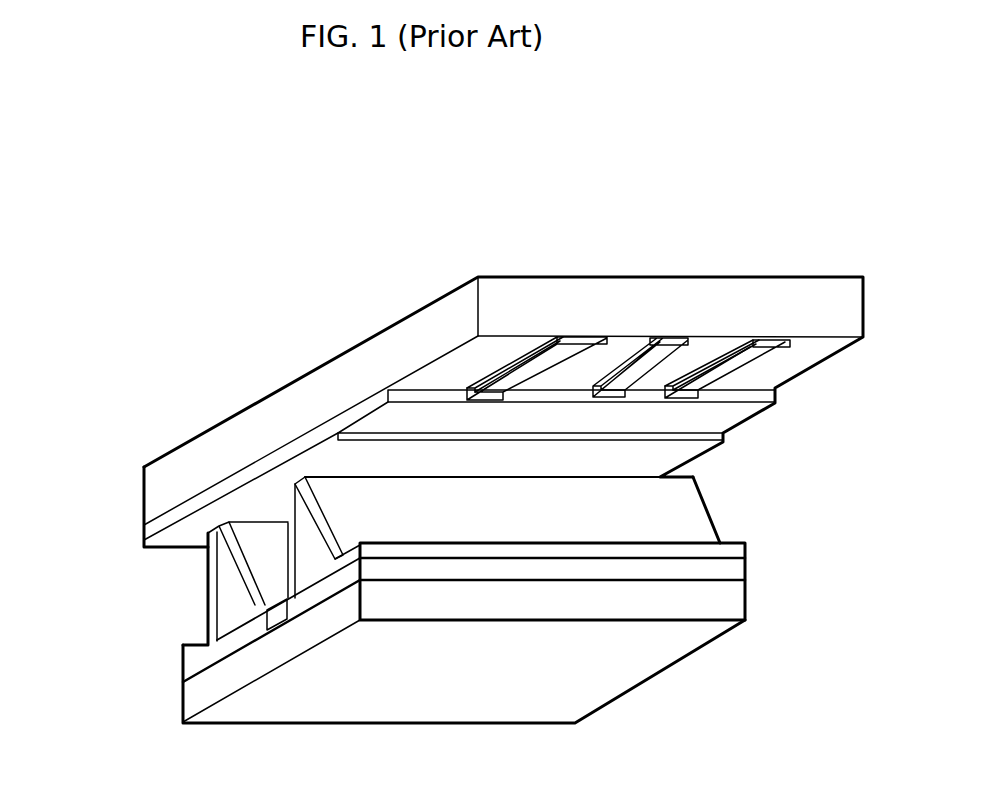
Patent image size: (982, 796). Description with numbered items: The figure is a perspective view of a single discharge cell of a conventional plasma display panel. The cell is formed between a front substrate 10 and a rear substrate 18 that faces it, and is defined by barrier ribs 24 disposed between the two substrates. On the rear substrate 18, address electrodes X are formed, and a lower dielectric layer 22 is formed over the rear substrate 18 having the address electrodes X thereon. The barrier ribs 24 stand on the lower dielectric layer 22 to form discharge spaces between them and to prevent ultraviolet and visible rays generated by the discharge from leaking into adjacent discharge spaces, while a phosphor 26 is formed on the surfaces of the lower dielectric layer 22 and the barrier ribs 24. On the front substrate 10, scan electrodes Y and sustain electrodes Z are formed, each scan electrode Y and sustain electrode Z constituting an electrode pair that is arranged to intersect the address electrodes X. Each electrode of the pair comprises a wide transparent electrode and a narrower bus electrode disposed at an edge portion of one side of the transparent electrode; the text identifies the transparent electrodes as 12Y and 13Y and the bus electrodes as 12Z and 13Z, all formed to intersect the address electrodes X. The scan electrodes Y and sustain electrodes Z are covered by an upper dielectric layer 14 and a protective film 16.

The front substrate 10 is at (681, 292).
The transparent electrode 12Y is at (607, 335).
The transparent electrode 13Y is at (558, 338).
The transparent electrode 12Z is at (712, 335).
The bus electrode 13Z is at (783, 337).
The scan electrode Y is at (488, 180).
The sustain electrode Z is at (770, 190).
The upper dielectric layer 14 is at (350, 420).
The protective film 16 is at (248, 490).
The rear substrate 18 is at (182, 716).
The lower dielectric layer 22 is at (735, 568).
The barrier ribs 24 is at (220, 602).
The phosphor 26 is at (692, 502).
The address electrodes X is at (183, 647).